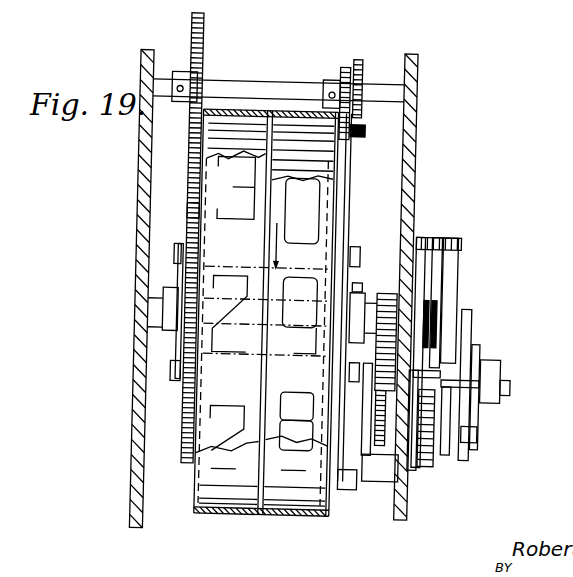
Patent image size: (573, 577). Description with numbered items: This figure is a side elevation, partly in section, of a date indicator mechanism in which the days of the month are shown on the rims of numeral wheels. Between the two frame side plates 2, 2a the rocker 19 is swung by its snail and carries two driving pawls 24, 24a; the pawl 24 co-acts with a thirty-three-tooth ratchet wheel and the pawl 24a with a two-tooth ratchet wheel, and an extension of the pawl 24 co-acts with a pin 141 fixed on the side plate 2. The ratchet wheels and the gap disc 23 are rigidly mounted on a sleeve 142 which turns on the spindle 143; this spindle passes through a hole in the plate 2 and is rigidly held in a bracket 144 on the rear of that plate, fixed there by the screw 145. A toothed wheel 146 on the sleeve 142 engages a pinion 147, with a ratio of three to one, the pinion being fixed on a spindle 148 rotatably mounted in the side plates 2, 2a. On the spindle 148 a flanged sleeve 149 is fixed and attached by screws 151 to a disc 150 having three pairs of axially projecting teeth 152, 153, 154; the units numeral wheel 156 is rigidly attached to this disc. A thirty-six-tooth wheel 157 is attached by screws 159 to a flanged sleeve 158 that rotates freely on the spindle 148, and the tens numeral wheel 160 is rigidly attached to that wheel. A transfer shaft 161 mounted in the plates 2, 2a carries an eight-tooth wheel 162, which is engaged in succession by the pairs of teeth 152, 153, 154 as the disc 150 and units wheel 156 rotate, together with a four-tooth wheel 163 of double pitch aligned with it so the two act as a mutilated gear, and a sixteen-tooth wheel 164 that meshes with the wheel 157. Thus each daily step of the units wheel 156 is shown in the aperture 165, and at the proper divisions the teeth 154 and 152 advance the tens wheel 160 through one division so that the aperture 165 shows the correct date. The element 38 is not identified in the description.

The side plate 2 is at (406, 155).
The side plate 2a is at (140, 190).
The rocker 19 is at (453, 293).
The gap disc 23 is at (468, 318).
The driving pawl 24 is at (440, 230).
The driving pawl 24a is at (434, 234).
The bar 38 is at (479, 343).
The pin 141 is at (445, 380).
The sleeve 142 is at (484, 368).
The spindle 143 is at (509, 390).
The bracket 144 is at (386, 479).
The screw 145 is at (409, 464).
The toothed wheel 146 is at (385, 443).
The pinion 147 is at (418, 234).
The spindle 148 is at (152, 321).
The flanged sleeve 149 is at (353, 298).
The disc 150 is at (340, 172).
The screws 151 is at (356, 245).
The pair of axially projecting teeth 152 is at (353, 125).
The pair of axially projecting teeth 153 is at (360, 287).
The pair of axially projecting teeth 154 is at (352, 488).
The units numeral wheel 156 is at (282, 112).
The toothed wheel 157 is at (188, 212).
The flanged sleeve 158 is at (177, 274).
The screws 159 is at (173, 255).
The tens numeral wheel 160 is at (225, 111).
The transfer shaft 161 is at (247, 89).
The 8-tooth wheel 162 is at (356, 63).
The toothed wheel 163 is at (337, 72).
The toothed wheel 164 is at (185, 35).
The aperture 165 is at (232, 359).